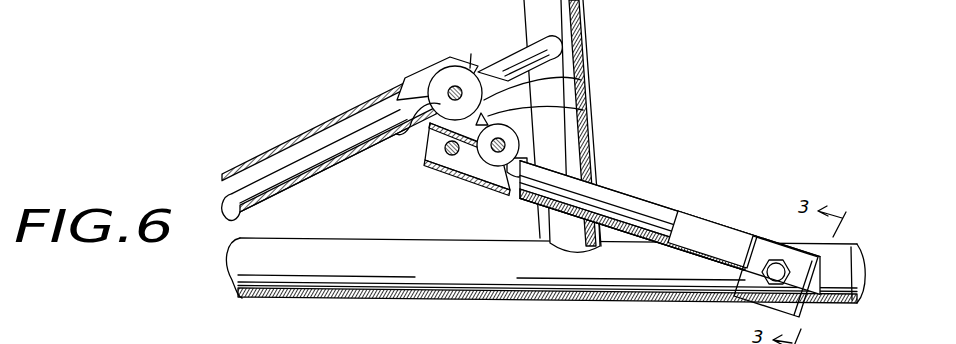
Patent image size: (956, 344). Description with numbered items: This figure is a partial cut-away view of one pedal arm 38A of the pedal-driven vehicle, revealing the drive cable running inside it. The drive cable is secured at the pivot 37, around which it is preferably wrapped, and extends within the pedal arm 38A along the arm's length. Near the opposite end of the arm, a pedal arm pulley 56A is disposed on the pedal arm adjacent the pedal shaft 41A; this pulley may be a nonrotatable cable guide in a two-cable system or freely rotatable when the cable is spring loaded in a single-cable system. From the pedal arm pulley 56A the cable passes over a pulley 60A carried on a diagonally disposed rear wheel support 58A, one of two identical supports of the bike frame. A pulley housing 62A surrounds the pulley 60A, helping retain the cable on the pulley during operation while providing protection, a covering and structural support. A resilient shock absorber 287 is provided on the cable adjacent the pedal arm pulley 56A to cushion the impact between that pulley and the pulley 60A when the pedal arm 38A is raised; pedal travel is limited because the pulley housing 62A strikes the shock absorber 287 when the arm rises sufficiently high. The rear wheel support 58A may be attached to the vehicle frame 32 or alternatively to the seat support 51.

The vehicle frame 32 is at (851, 304).
The pivot 37 is at (777, 258).
The pedal arm 38A is at (623, 195).
The pedal shaft 41A is at (432, 155).
The seat support 51 is at (581, 64).
The pedal arm pulley 56A is at (519, 147).
The rear wheel support 58A is at (284, 193).
The pulley 60A is at (471, 70).
The pulley housing 62A is at (405, 78).
The resilient shock absorber 287 is at (583, 110).